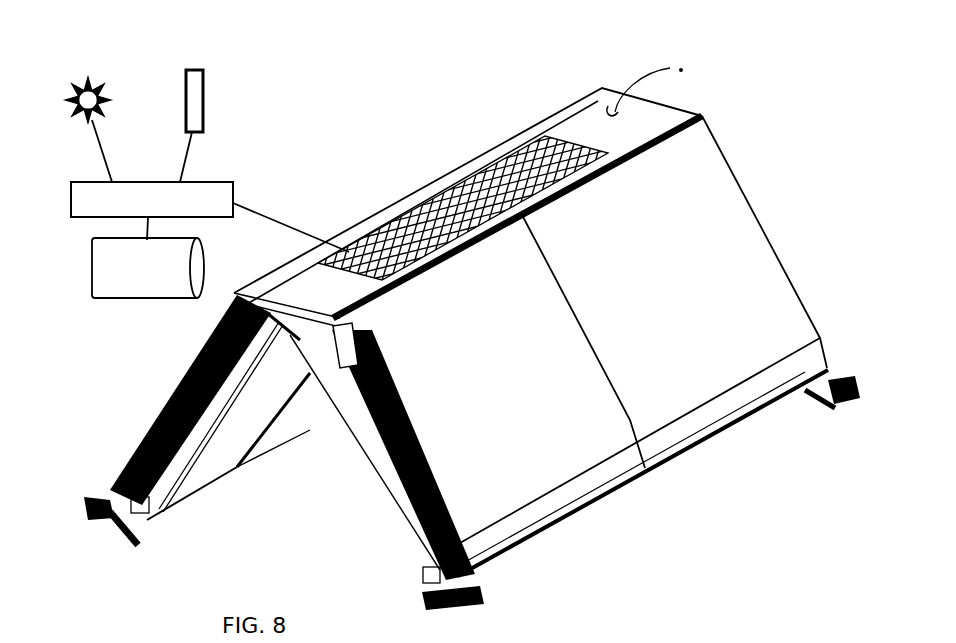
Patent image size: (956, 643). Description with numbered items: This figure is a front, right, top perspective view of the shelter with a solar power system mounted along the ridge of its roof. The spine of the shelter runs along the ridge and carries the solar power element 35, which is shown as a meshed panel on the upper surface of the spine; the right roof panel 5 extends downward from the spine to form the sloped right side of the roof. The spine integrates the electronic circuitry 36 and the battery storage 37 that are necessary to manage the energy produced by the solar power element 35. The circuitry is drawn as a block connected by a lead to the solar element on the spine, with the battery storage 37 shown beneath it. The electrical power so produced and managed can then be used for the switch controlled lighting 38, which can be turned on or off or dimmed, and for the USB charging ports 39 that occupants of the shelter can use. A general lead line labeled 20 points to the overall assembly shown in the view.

The solar panel assembly 20 is at (805, 59).
The right roof panel 5 is at (753, 267).
The solar power element 35 is at (480, 183).
The electronic circuitry 36 is at (71, 195).
The battery storage 37 is at (92, 285).
The switch controlled lighting 38 is at (70, 99).
The USB charging ports 39 is at (203, 90).